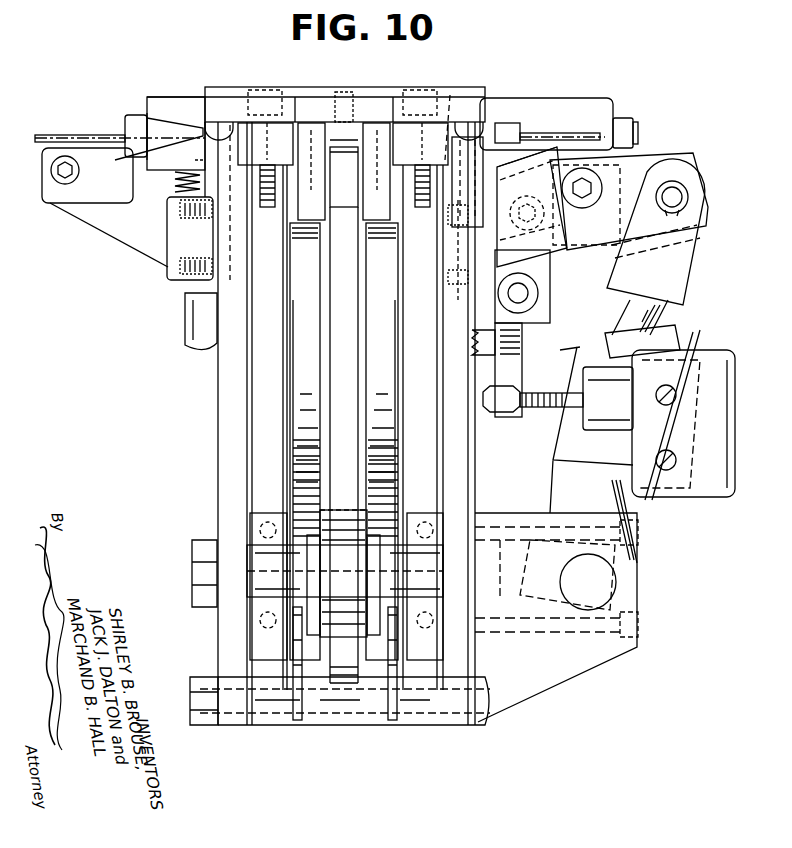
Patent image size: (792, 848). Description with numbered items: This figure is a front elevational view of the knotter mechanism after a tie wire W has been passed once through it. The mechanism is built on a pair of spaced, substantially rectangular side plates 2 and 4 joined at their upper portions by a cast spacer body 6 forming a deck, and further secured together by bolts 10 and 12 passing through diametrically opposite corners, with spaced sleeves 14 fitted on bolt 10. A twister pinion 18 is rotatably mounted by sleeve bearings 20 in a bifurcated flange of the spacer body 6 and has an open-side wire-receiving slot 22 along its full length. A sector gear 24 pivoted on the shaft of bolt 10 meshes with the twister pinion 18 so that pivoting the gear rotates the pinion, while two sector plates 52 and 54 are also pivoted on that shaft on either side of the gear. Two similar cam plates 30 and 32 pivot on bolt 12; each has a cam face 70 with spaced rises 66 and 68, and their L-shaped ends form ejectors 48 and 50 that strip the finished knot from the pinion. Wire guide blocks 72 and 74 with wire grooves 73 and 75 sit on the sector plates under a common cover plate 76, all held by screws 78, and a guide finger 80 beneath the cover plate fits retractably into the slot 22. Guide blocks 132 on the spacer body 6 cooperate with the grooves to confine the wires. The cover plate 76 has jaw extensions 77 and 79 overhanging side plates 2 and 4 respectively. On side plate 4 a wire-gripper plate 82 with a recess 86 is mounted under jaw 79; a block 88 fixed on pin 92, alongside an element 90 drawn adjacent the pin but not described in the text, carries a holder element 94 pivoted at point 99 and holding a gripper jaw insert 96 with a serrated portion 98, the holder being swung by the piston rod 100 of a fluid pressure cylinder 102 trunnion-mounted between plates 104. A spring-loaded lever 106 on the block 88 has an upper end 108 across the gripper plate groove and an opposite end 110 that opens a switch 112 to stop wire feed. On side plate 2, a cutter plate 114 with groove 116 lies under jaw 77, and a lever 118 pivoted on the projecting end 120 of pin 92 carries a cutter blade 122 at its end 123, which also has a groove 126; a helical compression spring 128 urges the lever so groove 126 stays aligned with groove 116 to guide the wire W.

The side plate 2 is at (218, 407).
The side plate 4 is at (468, 459).
The spacer body 6 is at (316, 90).
The bolt 10 is at (190, 565).
The bolt 12 is at (185, 312).
The sleeve 14 is at (295, 569).
The twister pinion 18 is at (376, 85).
The sleeve bearing 20 is at (344, 171).
The wire-receiving slot 22 is at (344, 173).
The sector gear 24 is at (354, 318).
The cam plate 30 is at (312, 357).
The cam plate 32 is at (388, 357).
The ejector 48 is at (298, 722).
The ejector 50 is at (392, 722).
The sector plate 52 is at (274, 437).
The sector plate 54 is at (427, 437).
The rise 66 is at (310, 240).
The rise 68 is at (300, 510).
The cam face 70 is at (305, 316).
The wire guide block 72 is at (294, 95).
The wire groove 73 is at (236, 95).
The wire guide block 74 is at (448, 92).
The wire groove 75 is at (395, 92).
The cover plate 76 is at (230, 108).
The jaw extension 77 is at (204, 130).
The screw 78 is at (267, 210).
The jaw extension 79 is at (470, 125).
The guide finger 80 is at (345, 92).
The wire-gripper plate 82 is at (490, 186).
The recess 86 is at (460, 245).
The block 88 is at (561, 100).
The washer 90 is at (640, 134).
The pin 92 is at (635, 118).
The holder element 94 is at (693, 155).
The gripper jaw insert 96 is at (520, 156).
The serrated portion 98 is at (480, 142).
The pivot point 99 is at (590, 205).
The piston rod 100 is at (665, 322).
The fluid pressure cylinder 102 is at (650, 526).
The plate 104 is at (566, 670).
The spring-loaded lever 106 is at (543, 345).
The upper end 108 is at (510, 122).
The opposite end 110 is at (515, 413).
The switch 112 is at (735, 421).
The cutter plate 114 is at (205, 203).
The groove 116 is at (184, 159).
The lever 118 is at (173, 95).
The projecting end 120 is at (124, 126).
The cutter blade 122 is at (148, 118).
The end 123 is at (152, 98).
The groove 126 is at (105, 207).
The helical compression spring 128 is at (174, 181).
The guide block 132 is at (268, 88).
The tie wire W is at (60, 135).